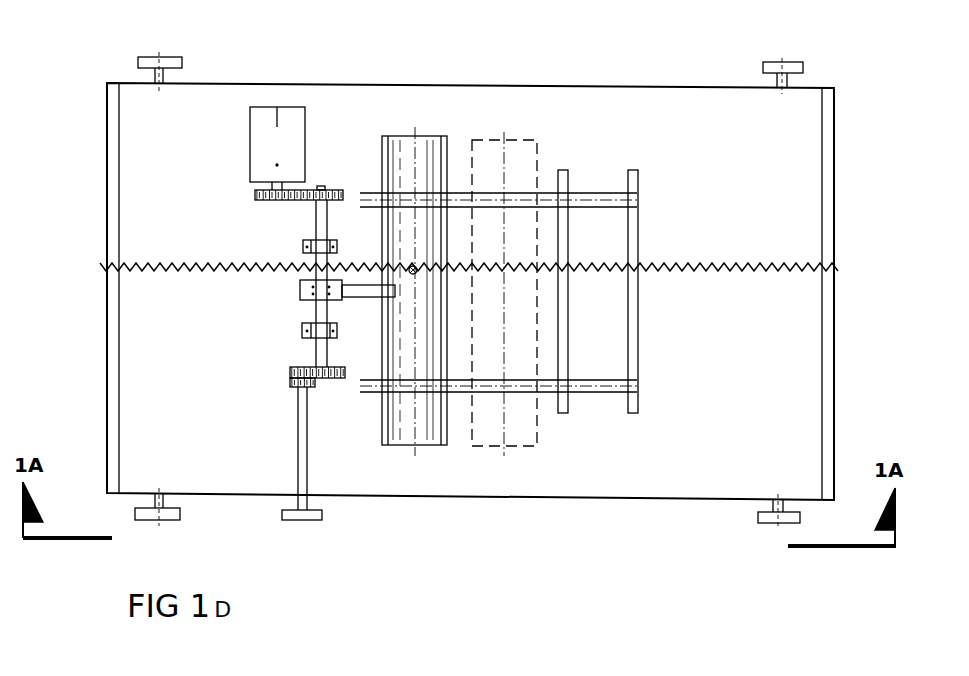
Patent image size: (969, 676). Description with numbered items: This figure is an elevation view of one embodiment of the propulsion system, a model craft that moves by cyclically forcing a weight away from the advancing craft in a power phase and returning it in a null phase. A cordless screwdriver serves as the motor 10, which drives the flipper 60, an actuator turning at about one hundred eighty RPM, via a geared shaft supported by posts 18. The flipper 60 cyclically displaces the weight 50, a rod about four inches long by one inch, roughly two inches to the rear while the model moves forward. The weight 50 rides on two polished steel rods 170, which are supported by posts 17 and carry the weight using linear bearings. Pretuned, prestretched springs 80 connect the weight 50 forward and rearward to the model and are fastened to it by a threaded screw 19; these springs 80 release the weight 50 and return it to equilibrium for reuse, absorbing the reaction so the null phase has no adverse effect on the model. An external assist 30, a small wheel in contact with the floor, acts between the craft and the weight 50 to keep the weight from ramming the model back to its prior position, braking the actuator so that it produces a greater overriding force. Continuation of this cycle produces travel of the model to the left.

The motor 10 is at (305, 145).
The posts 18 is at (300, 245).
The flipper 60 is at (298, 298).
The threaded screw 19 is at (411, 273).
The external assist 30 is at (293, 503).
The weight 50 is at (430, 447).
The polished steel rods 170 is at (583, 208).
The posts 17 is at (633, 172).
The pretuned springs 80 is at (183, 264).